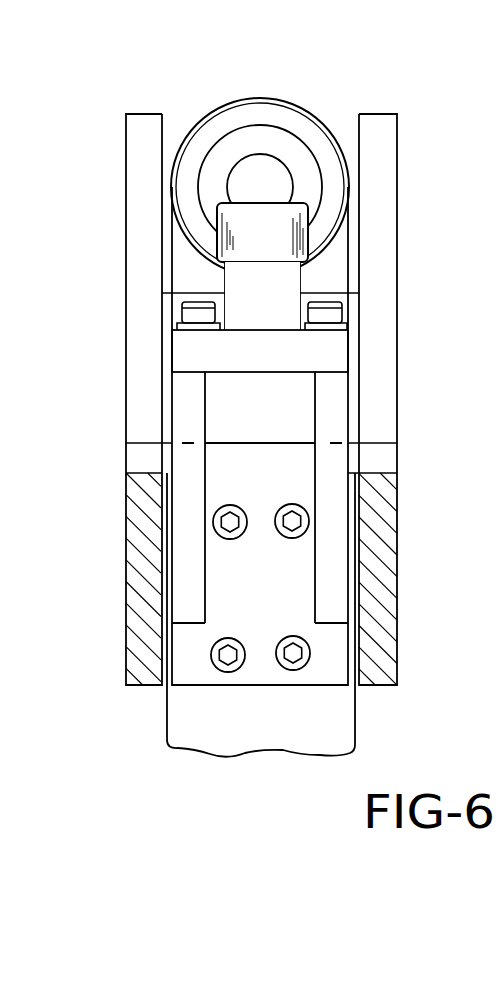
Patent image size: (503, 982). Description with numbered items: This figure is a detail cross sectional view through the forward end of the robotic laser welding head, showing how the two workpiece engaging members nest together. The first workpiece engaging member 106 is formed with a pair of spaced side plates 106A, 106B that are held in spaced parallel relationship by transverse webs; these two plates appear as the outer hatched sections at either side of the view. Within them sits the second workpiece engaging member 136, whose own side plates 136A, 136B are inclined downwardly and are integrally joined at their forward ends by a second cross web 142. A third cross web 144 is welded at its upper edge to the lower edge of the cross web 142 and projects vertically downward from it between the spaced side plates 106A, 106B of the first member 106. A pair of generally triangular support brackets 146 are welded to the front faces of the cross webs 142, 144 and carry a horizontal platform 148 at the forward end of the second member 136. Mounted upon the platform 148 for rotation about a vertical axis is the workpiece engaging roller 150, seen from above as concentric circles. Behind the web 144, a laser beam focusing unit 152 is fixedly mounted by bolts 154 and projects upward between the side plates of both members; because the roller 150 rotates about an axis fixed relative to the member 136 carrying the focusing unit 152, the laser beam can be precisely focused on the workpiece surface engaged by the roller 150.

The first workpiece engaging member 106 is at (258, 579).
The side plate 106A is at (400, 572).
The side plate 106B is at (130, 595).
The second workpiece engaging member 136 is at (315, 412).
The side plate 136A is at (387, 257).
The side plate 136B is at (137, 299).
The second cross web 142 is at (278, 415).
The third cross web 144 is at (222, 613).
The support bracket 146 is at (187, 592).
The horizontal platform 148 is at (266, 362).
The workpiece engaging roller 150 is at (297, 235).
The laser beam focusing unit 152 is at (318, 112).
The bolts 154 is at (228, 508).